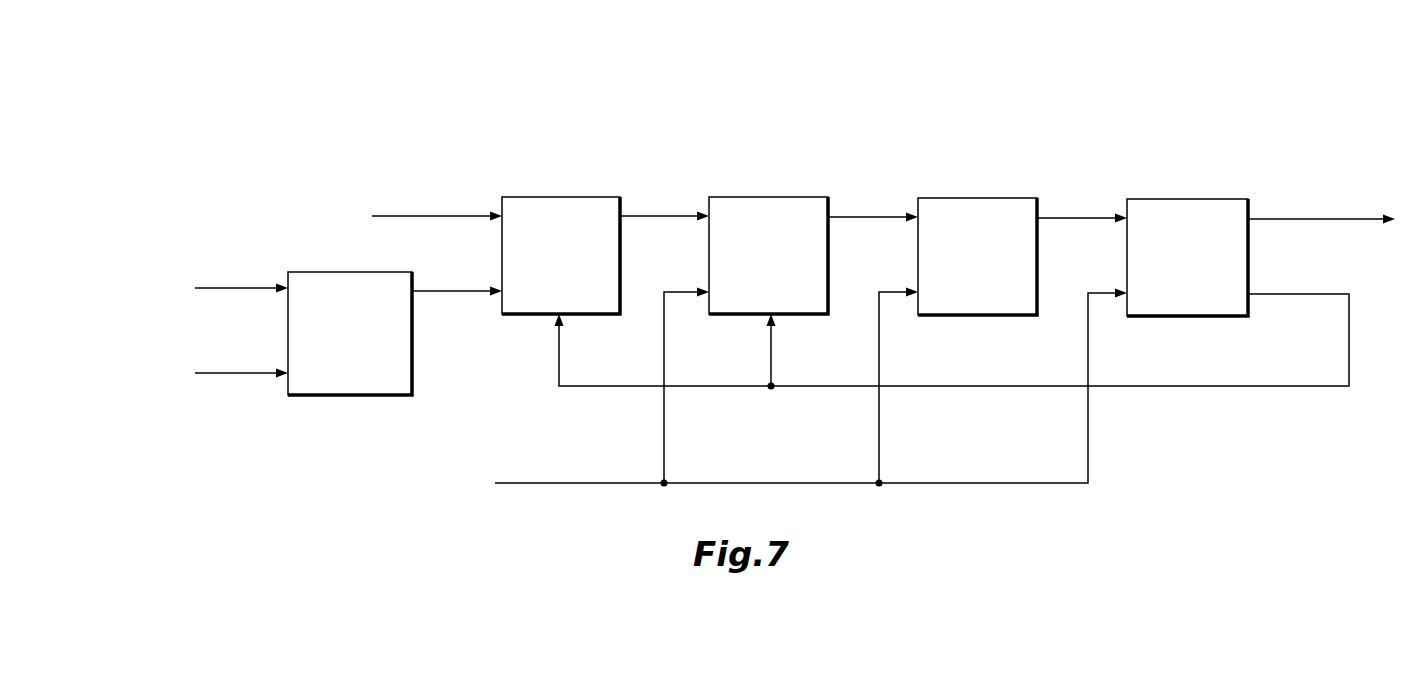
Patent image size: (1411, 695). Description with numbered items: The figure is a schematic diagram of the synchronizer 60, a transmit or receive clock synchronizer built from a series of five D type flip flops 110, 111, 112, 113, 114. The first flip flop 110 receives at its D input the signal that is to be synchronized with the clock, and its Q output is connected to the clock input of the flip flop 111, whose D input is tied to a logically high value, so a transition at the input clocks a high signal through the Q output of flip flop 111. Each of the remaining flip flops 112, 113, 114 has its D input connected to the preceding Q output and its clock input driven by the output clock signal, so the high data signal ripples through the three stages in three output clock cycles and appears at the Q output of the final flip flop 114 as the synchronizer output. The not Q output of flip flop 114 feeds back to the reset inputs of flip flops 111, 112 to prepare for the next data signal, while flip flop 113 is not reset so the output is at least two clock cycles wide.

The synchronizer 60 is at (490, 106).
The first flip flop 110 is at (344, 272).
The flip flop 111 is at (556, 197).
The first stage flip flop 112 is at (773, 197).
The flip flop 113 is at (980, 198).
The final flip flop 114 is at (1195, 199).